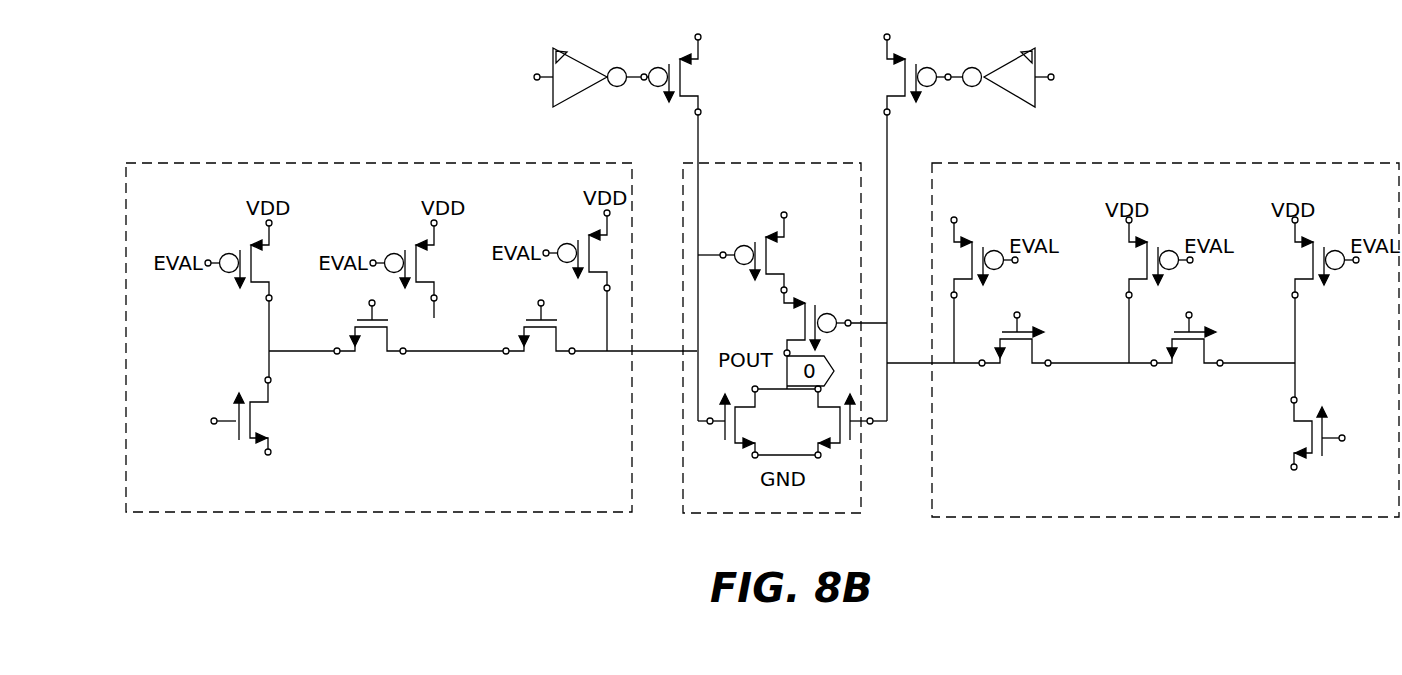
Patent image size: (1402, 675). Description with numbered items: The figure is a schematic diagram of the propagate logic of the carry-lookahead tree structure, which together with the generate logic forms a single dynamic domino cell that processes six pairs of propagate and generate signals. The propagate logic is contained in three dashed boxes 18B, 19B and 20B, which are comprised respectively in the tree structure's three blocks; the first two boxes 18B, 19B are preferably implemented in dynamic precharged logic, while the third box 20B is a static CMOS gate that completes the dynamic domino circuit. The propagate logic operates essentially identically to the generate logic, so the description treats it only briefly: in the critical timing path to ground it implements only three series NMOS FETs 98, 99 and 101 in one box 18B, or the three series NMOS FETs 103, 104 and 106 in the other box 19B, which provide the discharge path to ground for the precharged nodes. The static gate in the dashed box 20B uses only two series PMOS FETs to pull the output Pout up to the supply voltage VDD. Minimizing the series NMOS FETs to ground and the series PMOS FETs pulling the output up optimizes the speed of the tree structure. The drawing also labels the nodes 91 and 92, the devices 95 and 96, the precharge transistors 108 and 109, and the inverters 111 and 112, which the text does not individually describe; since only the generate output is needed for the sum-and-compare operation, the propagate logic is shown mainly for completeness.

The dashed box 18B is at (1208, 162).
The dashed box 19B is at (358, 162).
The dashed box 20B is at (789, 162).
The first node NP5_3 91 is at (655, 355).
The second node NP2_0 output line 92 is at (908, 368).
The PMOS transistor 95 is at (781, 254).
The NMOS transistor 96 is at (793, 323).
The series NMOS FET 98 is at (1017, 350).
The series NMOS FET 99 is at (1189, 350).
The series NMOS FET 101 is at (1300, 436).
The series NMOS FET 103 is at (541, 338).
The series NMOS FET 104 is at (371, 338).
The series NMOS FET 106 is at (263, 418).
The PMOS precharge transistor 108 is at (700, 80).
The PMOS precharge transistor 109 is at (893, 80).
The inverter 111 is at (582, 95).
The inverter 112 is at (1010, 95).